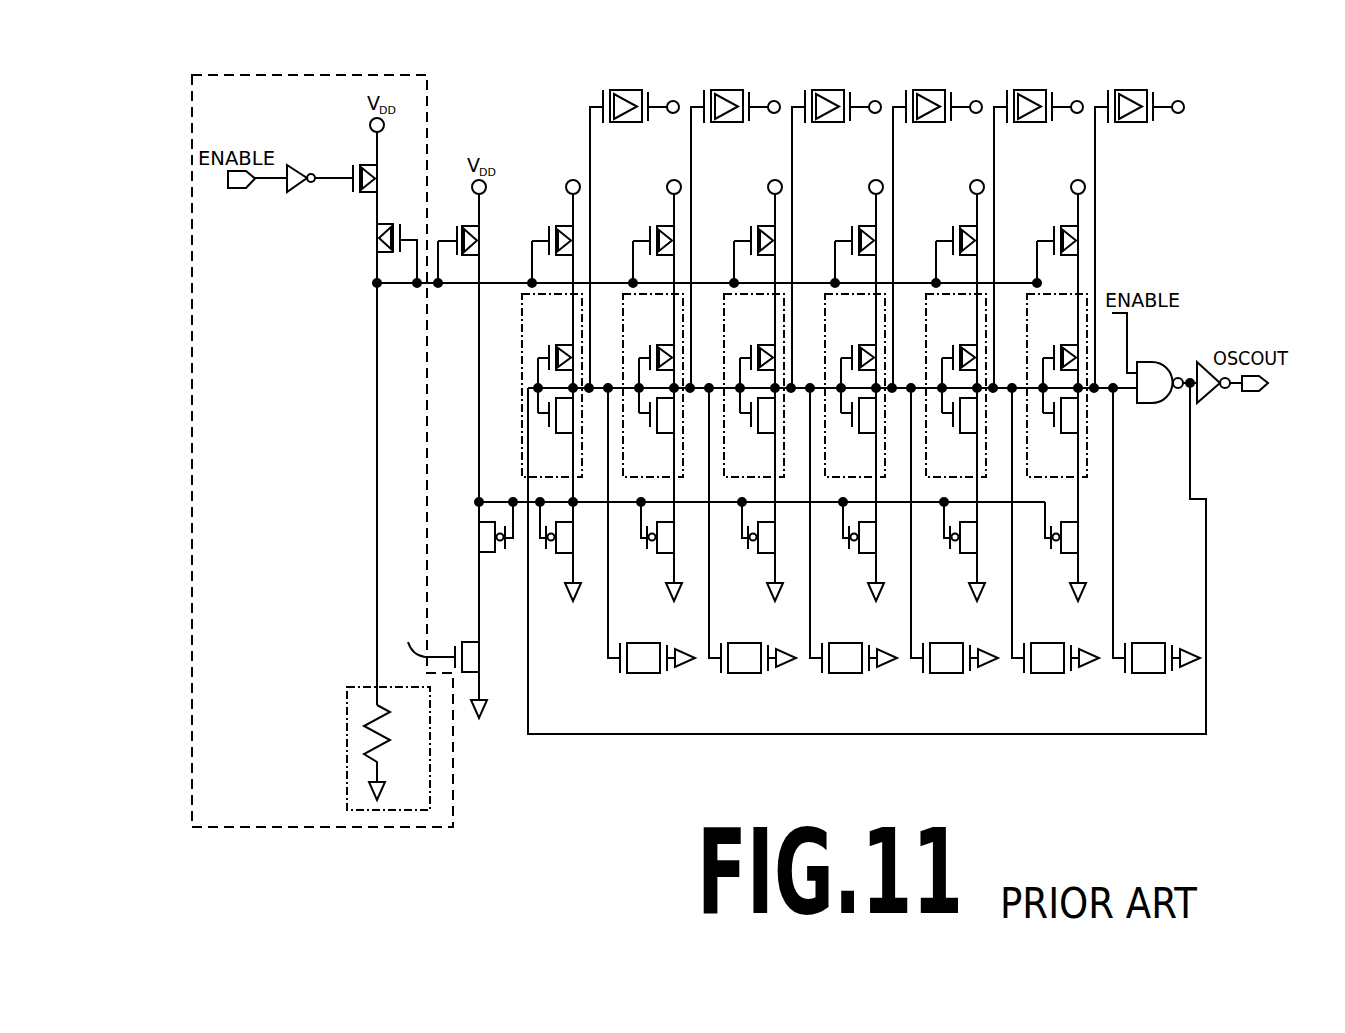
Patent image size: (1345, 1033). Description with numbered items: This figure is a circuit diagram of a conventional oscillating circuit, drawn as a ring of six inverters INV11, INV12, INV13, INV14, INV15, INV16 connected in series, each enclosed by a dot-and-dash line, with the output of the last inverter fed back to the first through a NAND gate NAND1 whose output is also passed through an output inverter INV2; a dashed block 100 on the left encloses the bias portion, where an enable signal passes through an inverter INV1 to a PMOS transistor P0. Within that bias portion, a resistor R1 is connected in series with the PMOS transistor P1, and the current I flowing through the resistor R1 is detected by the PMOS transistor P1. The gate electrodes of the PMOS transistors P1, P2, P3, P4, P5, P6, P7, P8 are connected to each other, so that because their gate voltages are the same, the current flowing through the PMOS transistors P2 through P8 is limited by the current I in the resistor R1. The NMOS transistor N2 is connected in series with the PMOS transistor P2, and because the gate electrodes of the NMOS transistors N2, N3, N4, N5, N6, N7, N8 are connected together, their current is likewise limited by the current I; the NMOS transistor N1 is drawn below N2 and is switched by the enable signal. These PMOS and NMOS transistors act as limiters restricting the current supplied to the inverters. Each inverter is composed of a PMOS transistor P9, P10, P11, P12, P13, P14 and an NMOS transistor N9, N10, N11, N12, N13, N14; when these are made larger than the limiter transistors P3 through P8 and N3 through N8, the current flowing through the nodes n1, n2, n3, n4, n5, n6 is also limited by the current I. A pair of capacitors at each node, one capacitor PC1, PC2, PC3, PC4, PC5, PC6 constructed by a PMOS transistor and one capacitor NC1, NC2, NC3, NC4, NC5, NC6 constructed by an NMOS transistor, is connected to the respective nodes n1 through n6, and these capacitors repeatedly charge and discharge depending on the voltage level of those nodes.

The oscillator bias circuit 100 is at (450, 807).
The inverter INV1 is at (300, 166).
The P-channel transistor P0 is at (393, 178).
The PMOS transistor P1 is at (374, 238).
The PMOS transistor P2 is at (466, 222).
The PMOS transistor P3 is at (564, 222).
The PMOS transistor P4 is at (665, 222).
The PMOS transistor P5 is at (766, 222).
The PMOS transistor P6 is at (867, 222).
The PMOS transistor P7 is at (968, 222).
The PMOS transistor P8 is at (1069, 222).
The PMOS transistor P9 is at (557, 342).
The PMOS transistor P10 is at (658, 342).
The PMOS transistor P11 is at (759, 342).
The PMOS transistor P12 is at (860, 342).
The PMOS transistor P13 is at (961, 342).
The PMOS transistor P14 is at (1062, 342).
The NMOS transistor N1 is at (477, 656).
The NMOS transistor N2 is at (478, 538).
The NMOS transistor N3 is at (560, 557).
The NMOS transistor N4 is at (655, 557).
The NMOS transistor N5 is at (756, 557).
The NMOS transistor N6 is at (857, 557).
The NMOS transistor N7 is at (958, 557).
The NMOS transistor N8 is at (1059, 557).
The NMOS transistor N9 is at (556, 435).
The NMOS transistor N10 is at (657, 435).
The NMOS transistor N11 is at (758, 435).
The NMOS transistor N12 is at (859, 435).
The NMOS transistor N13 is at (960, 435).
The NMOS transistor N14 is at (1061, 435).
The inverter INV11 is at (522, 293).
The inverter INV12 is at (623, 293).
The inverter INV13 is at (724, 293).
The inverter INV14 is at (825, 293).
The inverter INV15 is at (926, 293).
The inverter INV16 is at (1027, 293).
The node n1 is at (591, 395).
The node n2 is at (692, 395).
The node n3 is at (793, 395).
The node n4 is at (894, 395).
The node n5 is at (995, 395).
The node n6 is at (1096, 395).
The capacitor PC1 is at (624, 90).
The capacitor PC2 is at (725, 90).
The capacitor PC3 is at (826, 90).
The capacitor PC4 is at (927, 90).
The capacitor PC5 is at (1028, 90).
The capacitor PC6 is at (1129, 90).
The capacitor NC1 is at (641, 676).
The capacitor NC2 is at (742, 676).
The capacitor NC3 is at (843, 676).
The capacitor NC4 is at (944, 676).
The capacitor NC5 is at (1045, 676).
The capacitor NC6 is at (1146, 676).
The resistor R1 is at (386, 730).
The NAND gate NAND1 is at (1157, 400).
The output inverter INV2 is at (1208, 400).